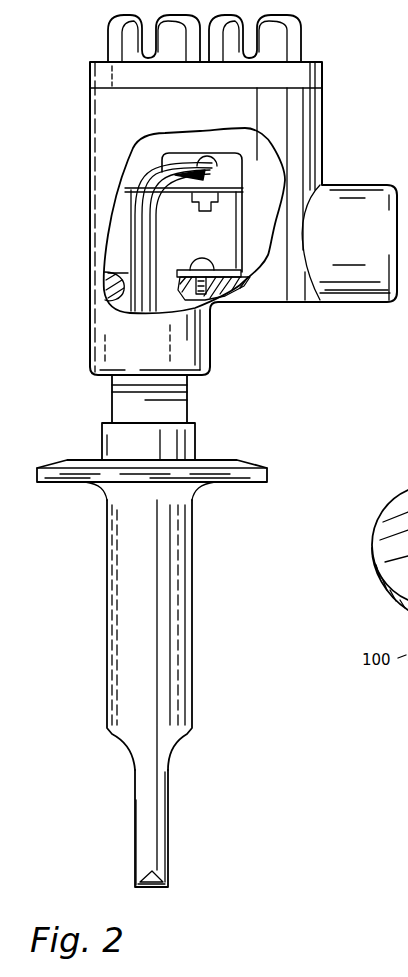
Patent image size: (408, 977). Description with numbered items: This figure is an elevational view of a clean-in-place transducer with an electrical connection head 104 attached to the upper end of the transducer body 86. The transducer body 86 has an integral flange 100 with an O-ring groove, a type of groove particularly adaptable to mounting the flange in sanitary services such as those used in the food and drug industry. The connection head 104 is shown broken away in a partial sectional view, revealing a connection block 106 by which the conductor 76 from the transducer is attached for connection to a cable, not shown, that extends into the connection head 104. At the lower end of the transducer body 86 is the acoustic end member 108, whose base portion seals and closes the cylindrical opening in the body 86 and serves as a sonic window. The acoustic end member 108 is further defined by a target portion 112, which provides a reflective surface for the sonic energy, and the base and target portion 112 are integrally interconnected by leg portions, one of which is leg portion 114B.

The conductor 76 is at (153, 258).
The transducer body 86 is at (165, 568).
The integral flange 100 is at (233, 470).
The connection head 104 is at (300, 147).
The connection block 106 is at (217, 180).
The acoustic end member 108 is at (118, 822).
The target portion 112 is at (152, 888).
The leg portion 114B is at (148, 802).